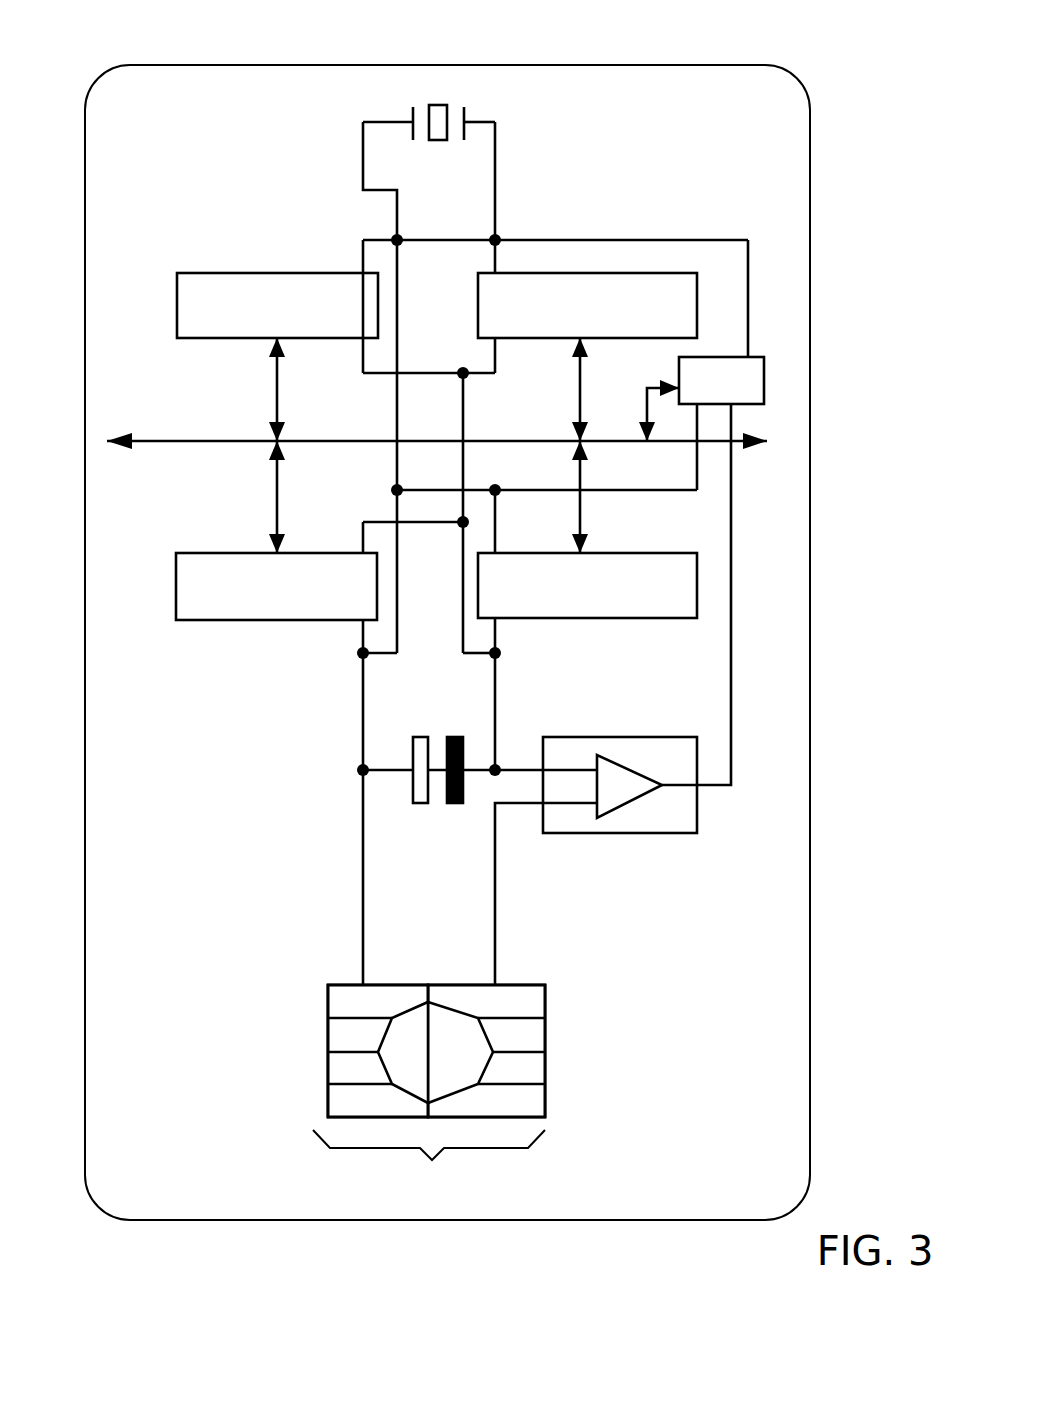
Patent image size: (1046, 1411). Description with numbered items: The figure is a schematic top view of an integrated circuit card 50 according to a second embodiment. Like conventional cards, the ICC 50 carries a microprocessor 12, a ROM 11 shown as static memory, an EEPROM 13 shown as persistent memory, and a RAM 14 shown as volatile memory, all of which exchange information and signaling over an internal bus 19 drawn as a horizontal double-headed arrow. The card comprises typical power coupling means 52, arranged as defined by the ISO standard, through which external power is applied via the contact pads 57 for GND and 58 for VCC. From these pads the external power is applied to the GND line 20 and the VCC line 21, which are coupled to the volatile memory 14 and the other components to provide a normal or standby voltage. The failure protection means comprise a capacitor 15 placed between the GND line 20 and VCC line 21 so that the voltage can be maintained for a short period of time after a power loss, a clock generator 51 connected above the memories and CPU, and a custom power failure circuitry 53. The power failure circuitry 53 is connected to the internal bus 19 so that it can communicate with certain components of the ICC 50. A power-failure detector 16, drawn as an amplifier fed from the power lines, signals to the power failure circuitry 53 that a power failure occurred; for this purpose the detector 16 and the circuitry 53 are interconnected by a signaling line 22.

The integrated circuit card 50 is at (683, 90).
The clock generator 51 is at (446, 104).
The ROM 11 is at (211, 268).
The microprocessor 12 is at (642, 283).
The EEPROM 13 is at (218, 608).
The RAM 14 is at (650, 608).
The capacitor 15 is at (420, 737).
The power-failure detector 16 is at (687, 823).
The internal bus 19 is at (768, 440).
The GND line 20 is at (360, 700).
The VCC line 21 is at (498, 712).
The signaling line 22 is at (731, 652).
The power coupling means 52 is at (437, 1066).
The power failure circuitry 53 is at (748, 372).
The GND contact pad 57 is at (328, 1002).
The VCC contact pad 58 is at (535, 995).